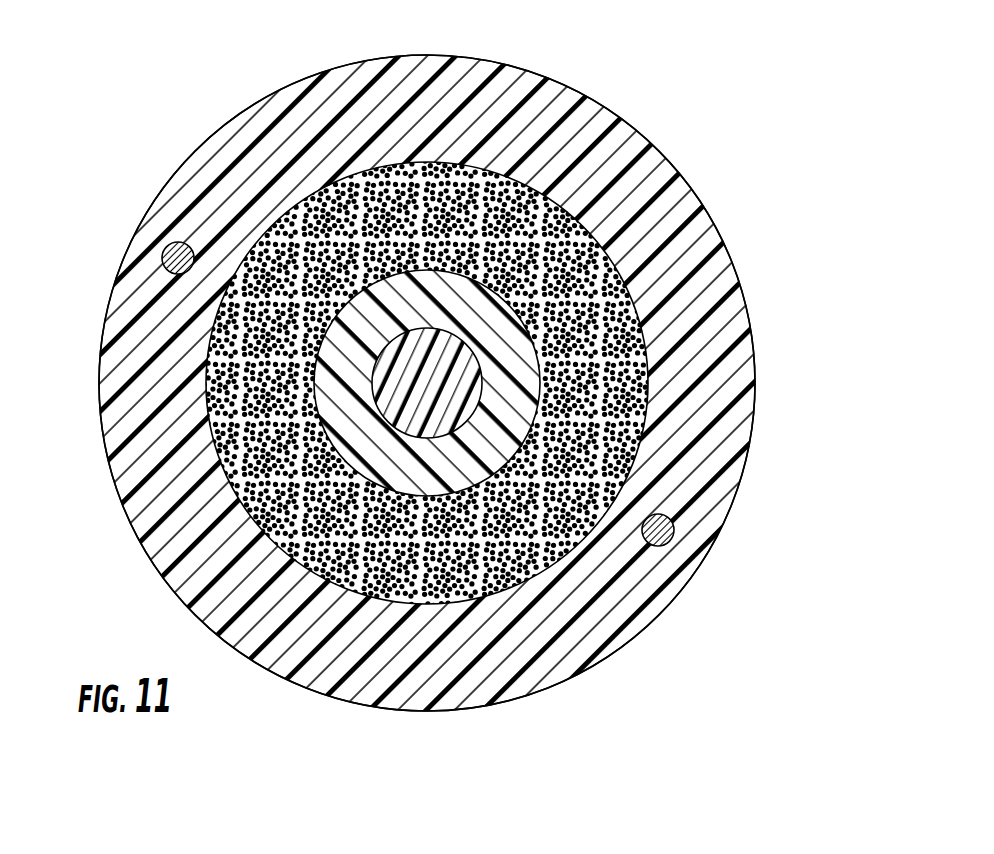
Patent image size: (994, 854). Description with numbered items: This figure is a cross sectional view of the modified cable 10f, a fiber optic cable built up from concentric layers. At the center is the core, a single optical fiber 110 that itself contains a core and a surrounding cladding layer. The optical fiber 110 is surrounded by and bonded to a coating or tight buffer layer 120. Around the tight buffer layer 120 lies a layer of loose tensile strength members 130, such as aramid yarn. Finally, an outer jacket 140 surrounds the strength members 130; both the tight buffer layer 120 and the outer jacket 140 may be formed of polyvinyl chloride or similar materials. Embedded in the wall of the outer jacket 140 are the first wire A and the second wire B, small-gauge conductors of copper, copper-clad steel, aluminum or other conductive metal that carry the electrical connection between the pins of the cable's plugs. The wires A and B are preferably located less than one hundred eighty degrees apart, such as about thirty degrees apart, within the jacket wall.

The cable 10f is at (229, 51).
The optical fiber 110 is at (482, 361).
The tight buffer layer 120 is at (488, 288).
The tensile strength members 130 is at (510, 179).
The outer jacket 140 is at (497, 65).
The first wire A is at (667, 544).
The second wire B is at (163, 251).